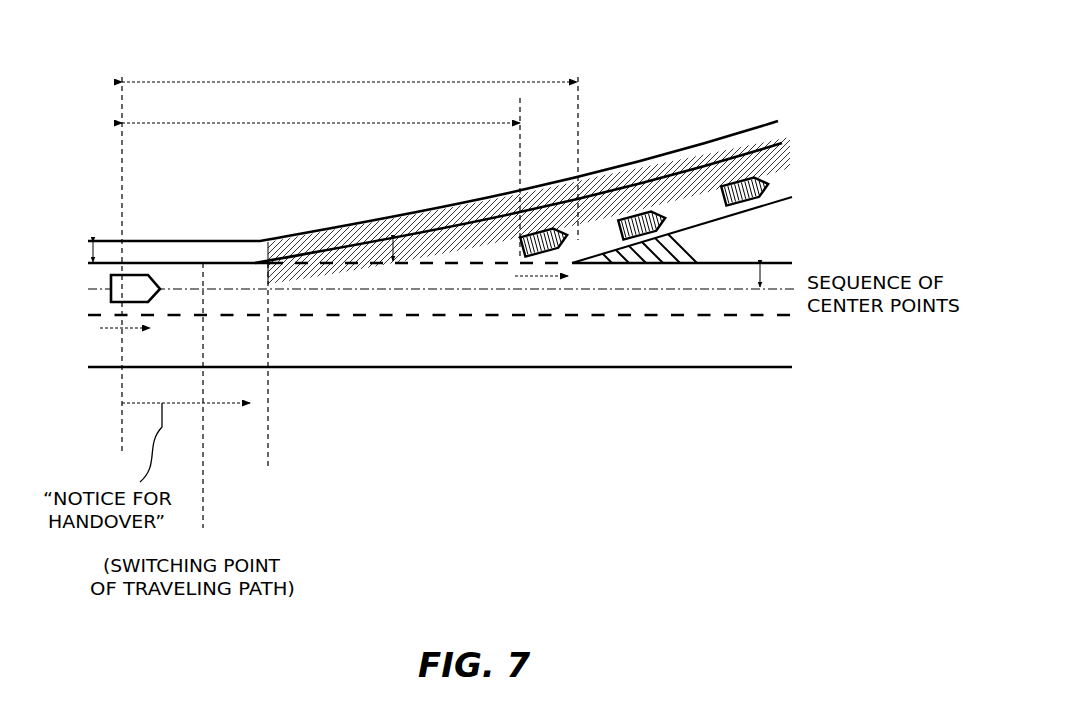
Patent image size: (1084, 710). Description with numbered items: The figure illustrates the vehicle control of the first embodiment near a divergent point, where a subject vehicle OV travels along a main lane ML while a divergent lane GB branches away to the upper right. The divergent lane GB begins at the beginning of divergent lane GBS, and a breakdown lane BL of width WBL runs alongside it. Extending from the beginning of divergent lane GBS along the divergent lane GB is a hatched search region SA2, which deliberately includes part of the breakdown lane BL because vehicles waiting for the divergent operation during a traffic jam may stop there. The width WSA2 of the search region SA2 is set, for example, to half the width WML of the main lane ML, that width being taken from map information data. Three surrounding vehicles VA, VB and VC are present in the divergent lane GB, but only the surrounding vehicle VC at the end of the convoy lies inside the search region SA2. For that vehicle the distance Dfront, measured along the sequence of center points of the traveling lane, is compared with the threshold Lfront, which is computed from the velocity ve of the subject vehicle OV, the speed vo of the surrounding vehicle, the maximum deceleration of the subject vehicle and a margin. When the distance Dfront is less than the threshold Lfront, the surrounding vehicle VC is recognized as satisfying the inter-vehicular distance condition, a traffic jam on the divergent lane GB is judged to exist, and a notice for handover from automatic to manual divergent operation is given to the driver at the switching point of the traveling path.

The subject vehicle OV is at (115, 275).
The breakdown lane BL is at (684, 150).
The main lane ML is at (717, 330).
The search region SA2 is at (478, 220).
The surrounding vehicle VA is at (748, 173).
The surrounding vehicle VB is at (644, 212).
The surrounding vehicle VC is at (545, 231).
The divergent lane GB is at (607, 227).
The beginning of divergent lane GBS is at (264, 384).
The width of breakdown lane WBL is at (93, 258).
The width of search region WSA2 is at (393, 238).
The width of main lane WML is at (760, 278).
The threshold Lfront is at (349, 56).
The distance Dfront is at (321, 107).
The velocity of subject vehicle ve is at (125, 345).
The speed of surrounding vehicle vo is at (541, 292).